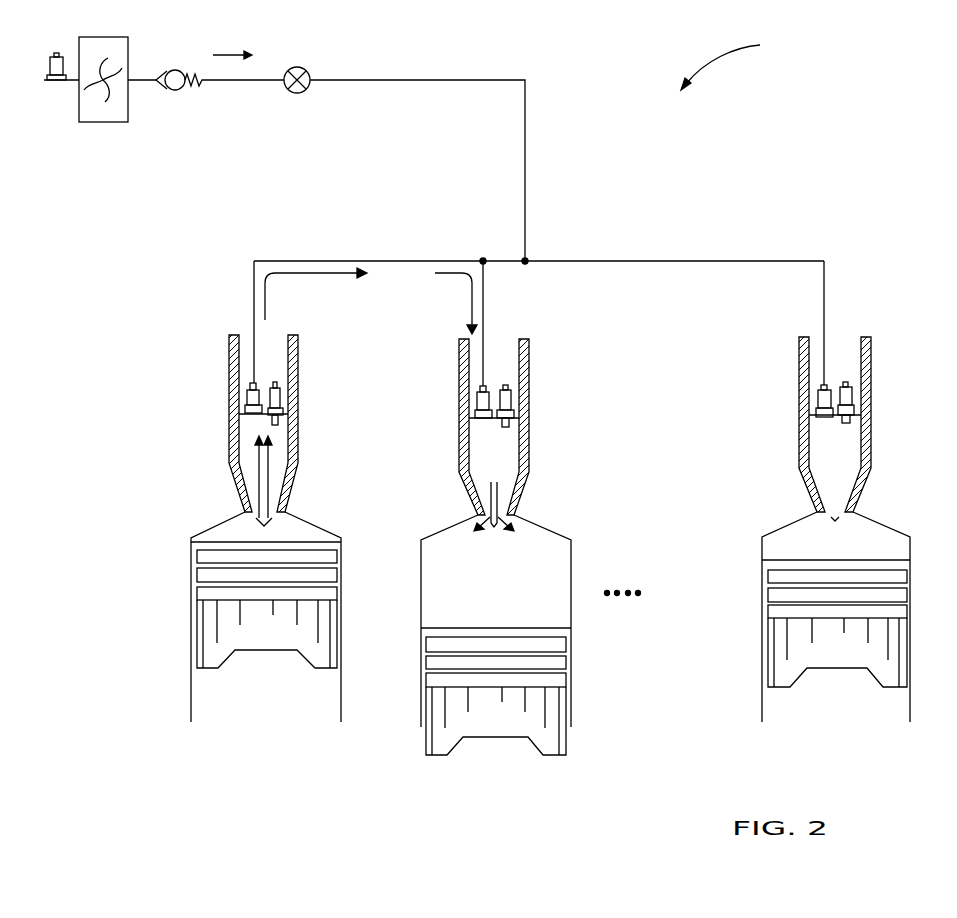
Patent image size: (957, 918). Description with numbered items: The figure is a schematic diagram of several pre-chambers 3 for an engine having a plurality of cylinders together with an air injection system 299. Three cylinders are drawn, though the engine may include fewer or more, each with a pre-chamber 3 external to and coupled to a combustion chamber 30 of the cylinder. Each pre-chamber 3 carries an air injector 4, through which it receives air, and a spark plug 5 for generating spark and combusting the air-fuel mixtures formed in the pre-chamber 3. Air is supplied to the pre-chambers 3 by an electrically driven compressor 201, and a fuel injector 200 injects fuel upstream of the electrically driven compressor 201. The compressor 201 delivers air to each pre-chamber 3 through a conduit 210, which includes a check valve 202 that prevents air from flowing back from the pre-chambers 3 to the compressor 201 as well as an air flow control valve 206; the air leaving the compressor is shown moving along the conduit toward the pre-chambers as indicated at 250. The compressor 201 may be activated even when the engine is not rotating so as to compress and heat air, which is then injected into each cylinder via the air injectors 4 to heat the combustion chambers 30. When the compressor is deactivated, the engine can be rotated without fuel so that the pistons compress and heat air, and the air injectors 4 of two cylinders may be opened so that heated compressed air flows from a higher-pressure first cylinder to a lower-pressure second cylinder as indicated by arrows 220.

The fuel injector 200 is at (55, 84).
The electrically driven compressor 201 is at (117, 90).
The check valve 202 is at (177, 70).
The air flow control valve 206 is at (297, 93).
The pressurized air flow 250 is at (230, 52).
The air injection system 299 is at (743, 62).
The conduit 210 is at (668, 260).
The arrows 220 is at (265, 300).
The pre-chamber 3 is at (229, 368).
The air injector 4 is at (247, 410).
The spark plug 5 is at (280, 400).
The combustion chamber 30 is at (218, 533).